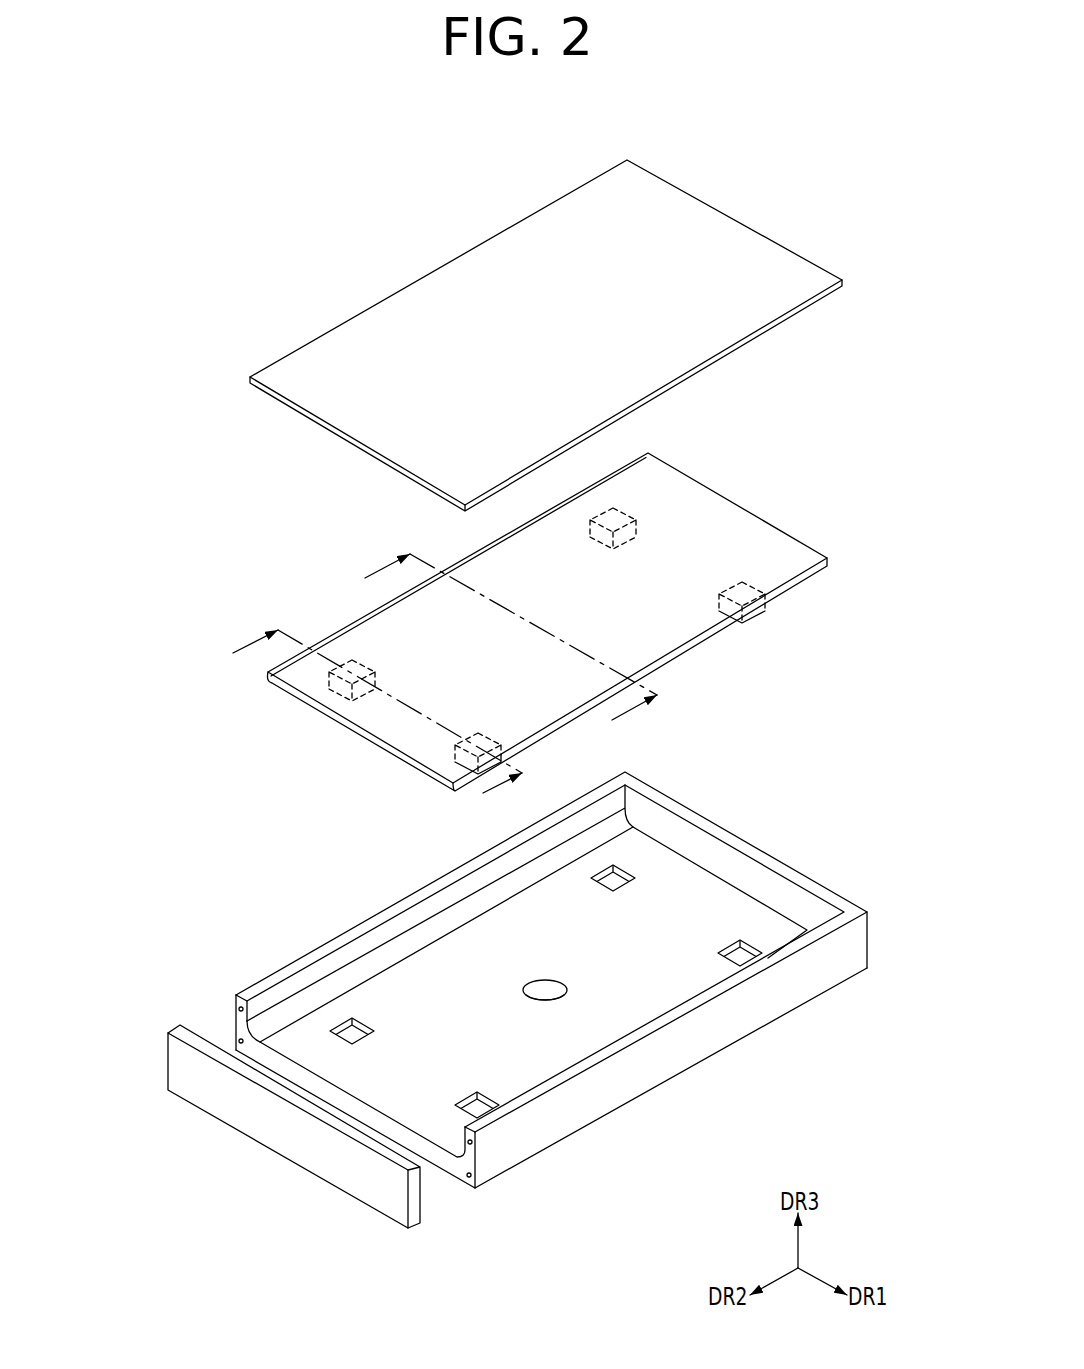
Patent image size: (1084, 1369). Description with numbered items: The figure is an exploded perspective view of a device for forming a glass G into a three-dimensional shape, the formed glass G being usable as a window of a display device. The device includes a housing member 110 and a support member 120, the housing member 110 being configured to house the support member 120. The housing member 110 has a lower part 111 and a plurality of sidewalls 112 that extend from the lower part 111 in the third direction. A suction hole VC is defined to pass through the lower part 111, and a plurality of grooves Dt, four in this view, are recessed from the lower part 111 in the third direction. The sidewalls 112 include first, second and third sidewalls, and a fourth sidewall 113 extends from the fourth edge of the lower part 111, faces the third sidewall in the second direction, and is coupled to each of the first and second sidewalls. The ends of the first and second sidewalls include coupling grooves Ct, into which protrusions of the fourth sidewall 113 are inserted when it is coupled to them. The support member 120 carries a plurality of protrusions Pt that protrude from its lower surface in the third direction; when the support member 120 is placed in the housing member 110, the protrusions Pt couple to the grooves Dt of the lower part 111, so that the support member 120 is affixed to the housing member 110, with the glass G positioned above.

The glass G is at (716, 232).
The support member 120 is at (573, 643).
The protrusion Pt is at (342, 686).
The housing member 110 is at (551, 1003).
The lower part 111 is at (677, 877).
The sidewall 112 is at (766, 885).
The fourth sidewall 113 is at (175, 1062).
The groove Dt is at (347, 1032).
The suction hole VC is at (547, 989).
The coupling groove Ct is at (468, 1178).